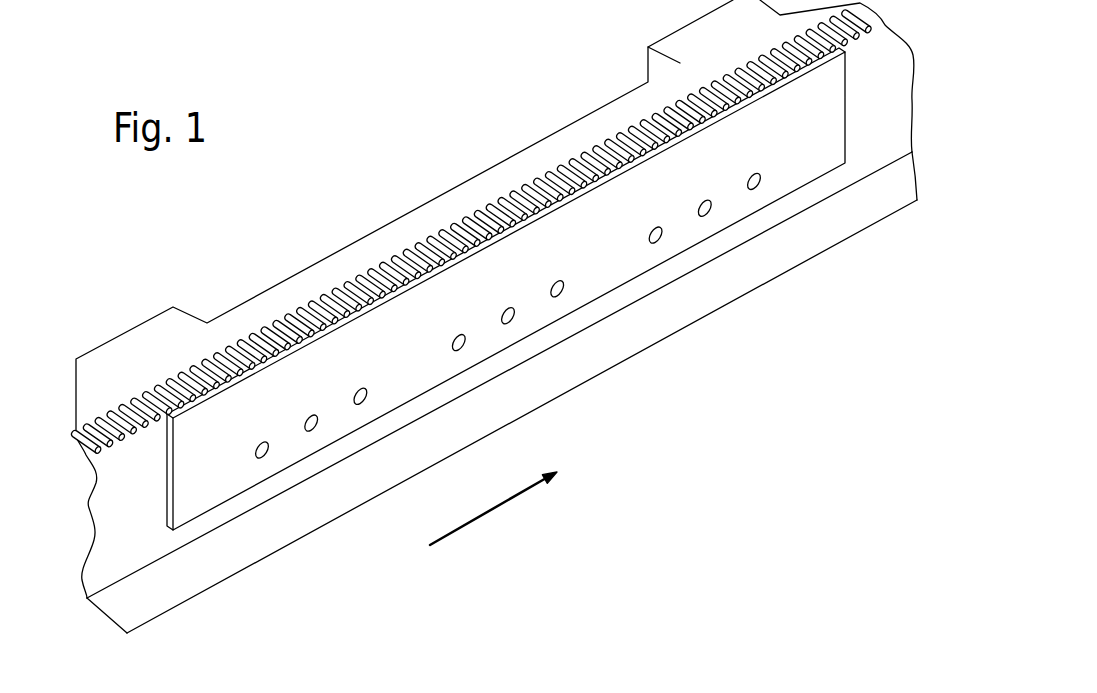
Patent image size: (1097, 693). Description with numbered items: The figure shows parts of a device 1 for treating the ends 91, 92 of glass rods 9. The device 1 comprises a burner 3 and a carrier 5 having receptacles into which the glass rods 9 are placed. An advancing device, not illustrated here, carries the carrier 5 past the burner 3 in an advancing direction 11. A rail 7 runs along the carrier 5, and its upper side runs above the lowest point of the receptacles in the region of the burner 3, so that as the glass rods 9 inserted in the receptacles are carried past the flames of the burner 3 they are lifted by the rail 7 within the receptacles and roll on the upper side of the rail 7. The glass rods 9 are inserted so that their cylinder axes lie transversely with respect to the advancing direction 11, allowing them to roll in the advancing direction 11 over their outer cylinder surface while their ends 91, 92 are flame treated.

The device 1 is at (875, 563).
The burner 3 is at (293, 280).
The carrier 5 is at (917, 168).
The rail 7 is at (175, 483).
The glass rods 9 is at (477, 227).
The end of glass rod 91 is at (543, 193).
The end of glass rod 92 is at (548, 203).
The advancing direction 11 is at (477, 523).